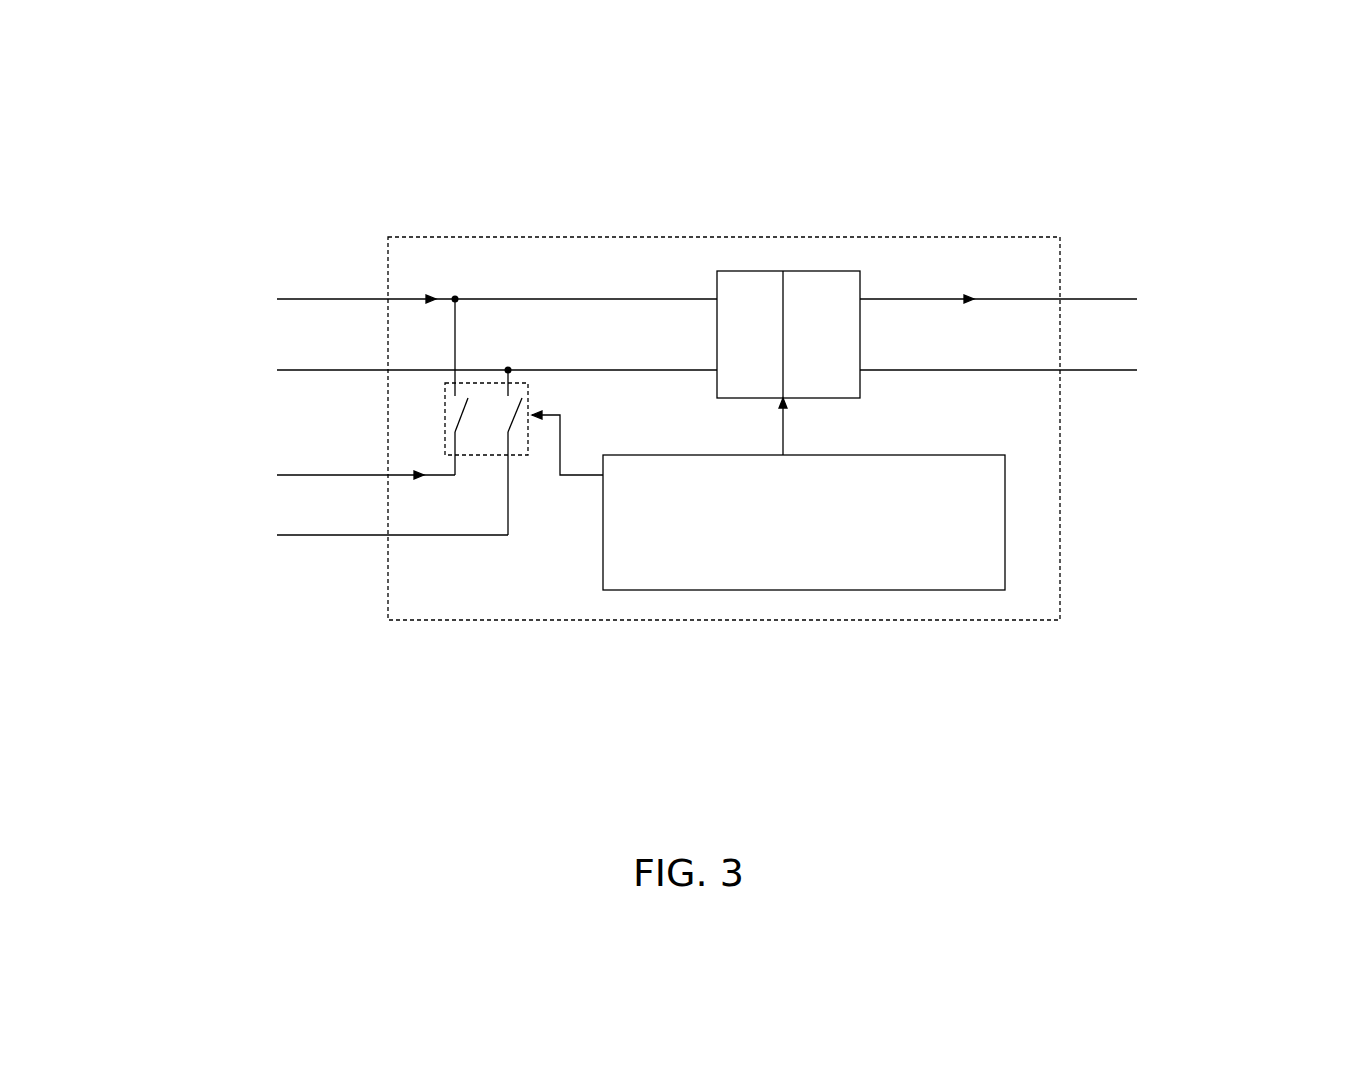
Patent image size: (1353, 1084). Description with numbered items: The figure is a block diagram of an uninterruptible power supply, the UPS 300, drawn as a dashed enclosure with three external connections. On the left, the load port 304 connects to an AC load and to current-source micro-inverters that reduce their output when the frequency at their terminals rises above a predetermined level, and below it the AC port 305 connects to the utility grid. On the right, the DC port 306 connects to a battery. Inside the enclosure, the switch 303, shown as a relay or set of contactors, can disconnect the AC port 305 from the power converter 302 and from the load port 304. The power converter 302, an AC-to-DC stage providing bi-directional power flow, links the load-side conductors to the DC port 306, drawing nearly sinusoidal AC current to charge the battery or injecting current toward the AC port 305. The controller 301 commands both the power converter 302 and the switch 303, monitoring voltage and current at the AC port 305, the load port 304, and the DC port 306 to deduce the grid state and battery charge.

The UPS 300 is at (405, 622).
The controller 301 is at (642, 540).
The power converter 302 is at (783, 257).
The switch 303 is at (443, 396).
The load port 304 is at (267, 325).
The AC port 305 is at (267, 498).
The DC port 306 is at (1150, 331).